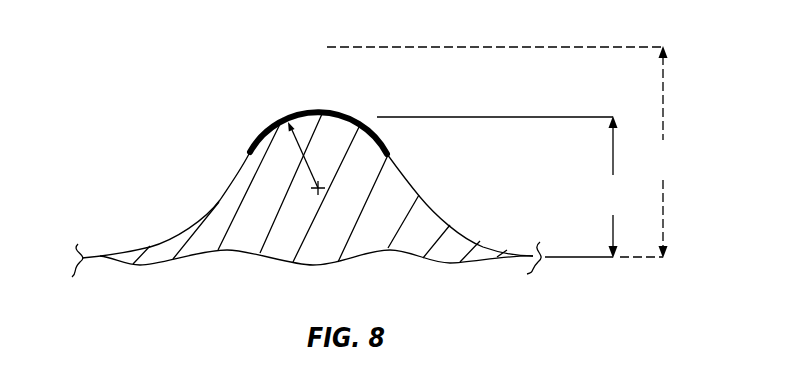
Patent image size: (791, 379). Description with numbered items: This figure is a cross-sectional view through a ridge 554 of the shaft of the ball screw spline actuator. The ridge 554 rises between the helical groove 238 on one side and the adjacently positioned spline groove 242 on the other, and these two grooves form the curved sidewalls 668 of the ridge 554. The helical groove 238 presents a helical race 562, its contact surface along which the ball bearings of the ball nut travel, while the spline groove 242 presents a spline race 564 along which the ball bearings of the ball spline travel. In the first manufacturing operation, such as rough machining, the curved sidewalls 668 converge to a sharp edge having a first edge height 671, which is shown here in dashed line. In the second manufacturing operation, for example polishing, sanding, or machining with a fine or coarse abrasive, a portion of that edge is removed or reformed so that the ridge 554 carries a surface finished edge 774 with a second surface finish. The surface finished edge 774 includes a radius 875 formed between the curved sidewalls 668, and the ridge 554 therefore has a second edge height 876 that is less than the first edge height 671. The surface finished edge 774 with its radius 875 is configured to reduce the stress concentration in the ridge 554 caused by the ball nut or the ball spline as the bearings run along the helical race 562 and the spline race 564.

The helical groove 238 is at (130, 189).
The spline groove 242 is at (483, 189).
The ridge 554 is at (246, 136).
The helical race 562 is at (118, 250).
The spline race 564 is at (492, 240).
The curved sidewalls 668 is at (213, 200).
The first edge height 671 is at (503, 152).
The surface finished edge 774 is at (322, 122).
The radius 875 is at (300, 133).
The second edge height 876 is at (500, 187).